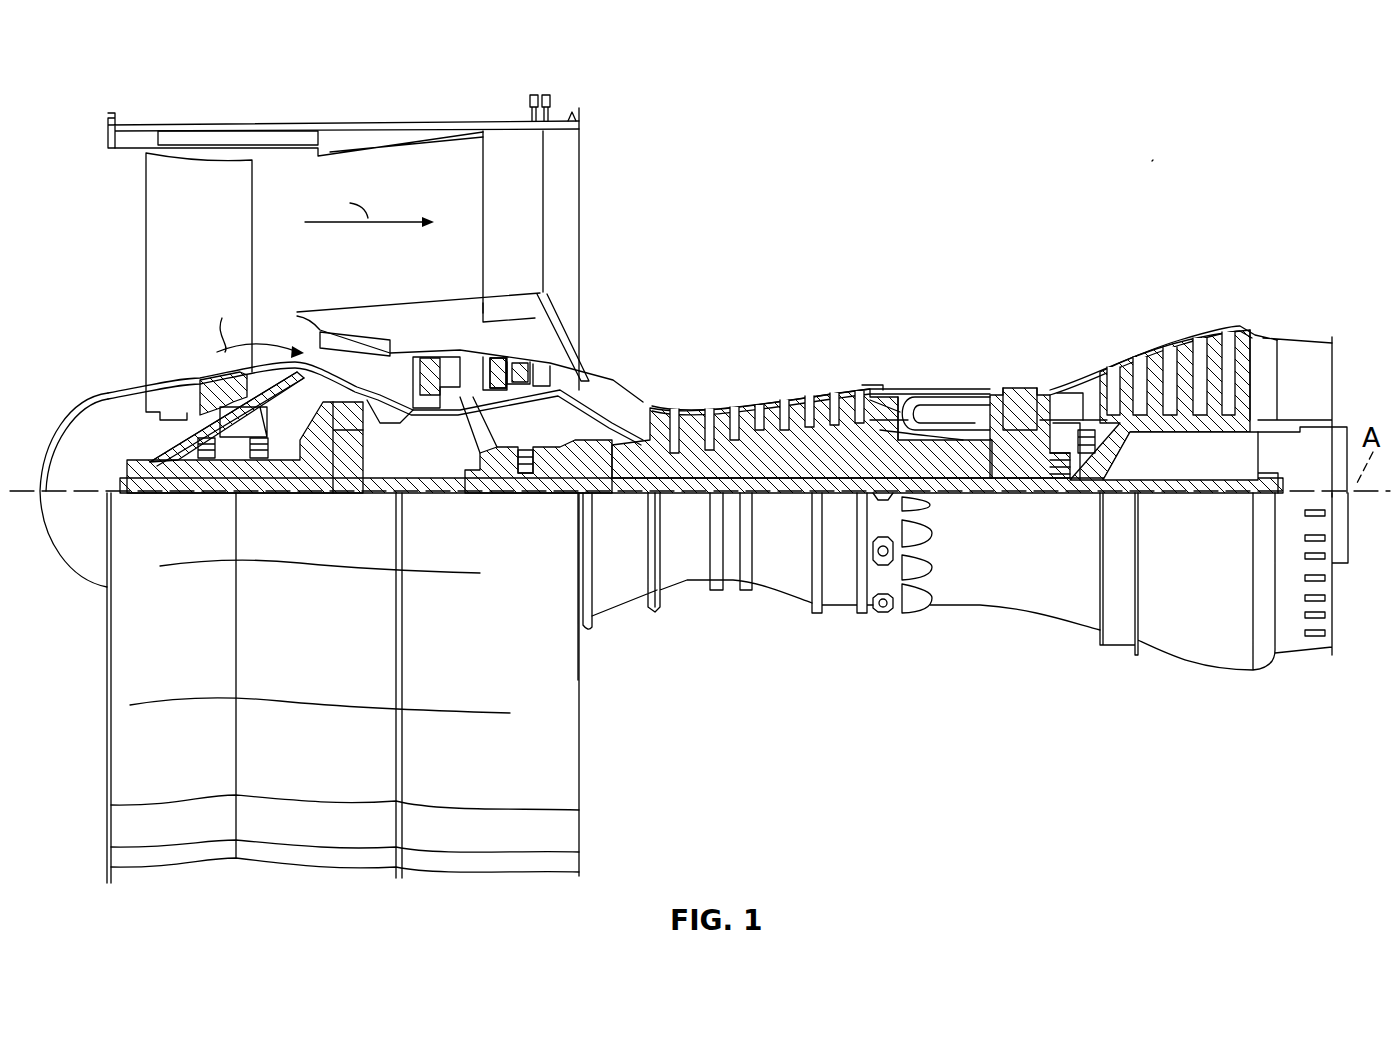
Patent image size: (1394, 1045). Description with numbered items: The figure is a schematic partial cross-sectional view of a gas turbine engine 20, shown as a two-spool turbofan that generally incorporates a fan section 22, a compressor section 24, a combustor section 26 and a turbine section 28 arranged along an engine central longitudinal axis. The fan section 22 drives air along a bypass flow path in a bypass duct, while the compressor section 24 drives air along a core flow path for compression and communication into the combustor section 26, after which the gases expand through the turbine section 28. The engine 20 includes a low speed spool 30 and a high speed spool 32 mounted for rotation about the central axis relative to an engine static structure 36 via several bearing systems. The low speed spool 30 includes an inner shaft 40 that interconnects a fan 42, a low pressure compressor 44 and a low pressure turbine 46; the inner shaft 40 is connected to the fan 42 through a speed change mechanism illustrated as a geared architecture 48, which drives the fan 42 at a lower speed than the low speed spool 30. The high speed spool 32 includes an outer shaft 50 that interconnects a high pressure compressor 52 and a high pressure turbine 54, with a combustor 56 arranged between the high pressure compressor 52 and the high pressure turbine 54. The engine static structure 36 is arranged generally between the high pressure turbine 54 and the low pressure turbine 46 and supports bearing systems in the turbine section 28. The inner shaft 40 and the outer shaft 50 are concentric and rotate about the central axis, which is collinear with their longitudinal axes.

The gas turbine engine 20 is at (1158, 156).
The fan section 22 is at (215, 108).
The compressor section 24 is at (772, 347).
The combustor section 26 is at (936, 346).
The turbine section 28 is at (1086, 326).
The low speed spool 30 is at (797, 500).
The high speed spool 32 is at (853, 443).
The engine static structure 36 is at (841, 624).
The inner shaft 40 is at (593, 488).
The fan 42 is at (228, 257).
The low pressure compressor 44 is at (493, 370).
The low pressure turbine 46 is at (1190, 352).
The geared architecture 48 is at (345, 458).
The outer shaft 50 is at (972, 486).
The high pressure compressor 52 is at (760, 460).
The high pressure turbine 54 is at (1023, 386).
The combustor 56 is at (943, 410).